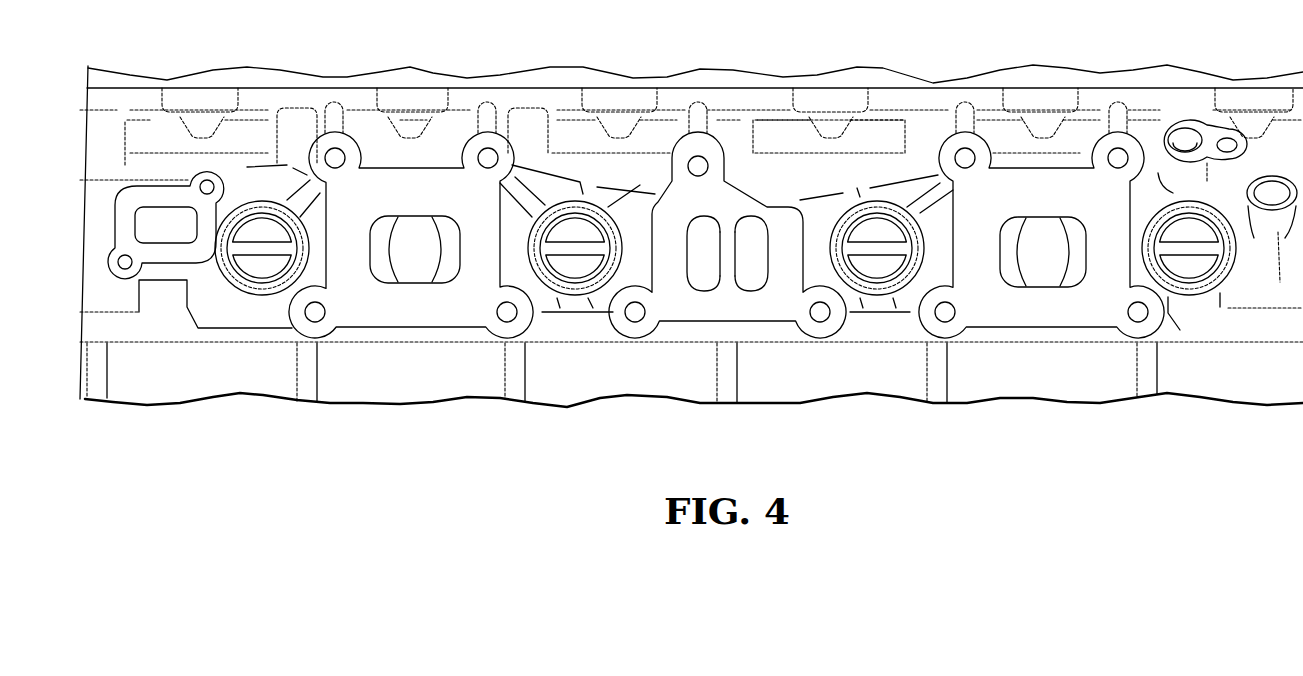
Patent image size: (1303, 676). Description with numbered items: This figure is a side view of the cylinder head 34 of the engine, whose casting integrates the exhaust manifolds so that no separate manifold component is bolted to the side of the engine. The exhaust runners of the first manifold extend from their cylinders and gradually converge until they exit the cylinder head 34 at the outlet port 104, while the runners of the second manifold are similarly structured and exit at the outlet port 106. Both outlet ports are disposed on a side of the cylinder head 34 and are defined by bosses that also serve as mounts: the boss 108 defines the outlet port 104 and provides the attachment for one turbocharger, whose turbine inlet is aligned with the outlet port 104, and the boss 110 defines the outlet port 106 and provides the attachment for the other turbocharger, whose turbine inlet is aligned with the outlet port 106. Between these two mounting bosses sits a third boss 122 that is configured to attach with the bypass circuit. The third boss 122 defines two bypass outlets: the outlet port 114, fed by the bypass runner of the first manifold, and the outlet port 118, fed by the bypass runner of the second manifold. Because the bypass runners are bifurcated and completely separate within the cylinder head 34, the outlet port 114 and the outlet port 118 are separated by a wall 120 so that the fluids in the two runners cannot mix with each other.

The cylinder head 34 is at (104, 292).
The outlet port 106 is at (389, 288).
The boss 110 is at (423, 310).
The outlet port 118 is at (689, 304).
The third boss 122 is at (697, 297).
The wall 120 is at (726, 278).
The outlet port 114 is at (757, 276).
The boss 108 is at (1043, 318).
The outlet port 104 is at (1063, 285).